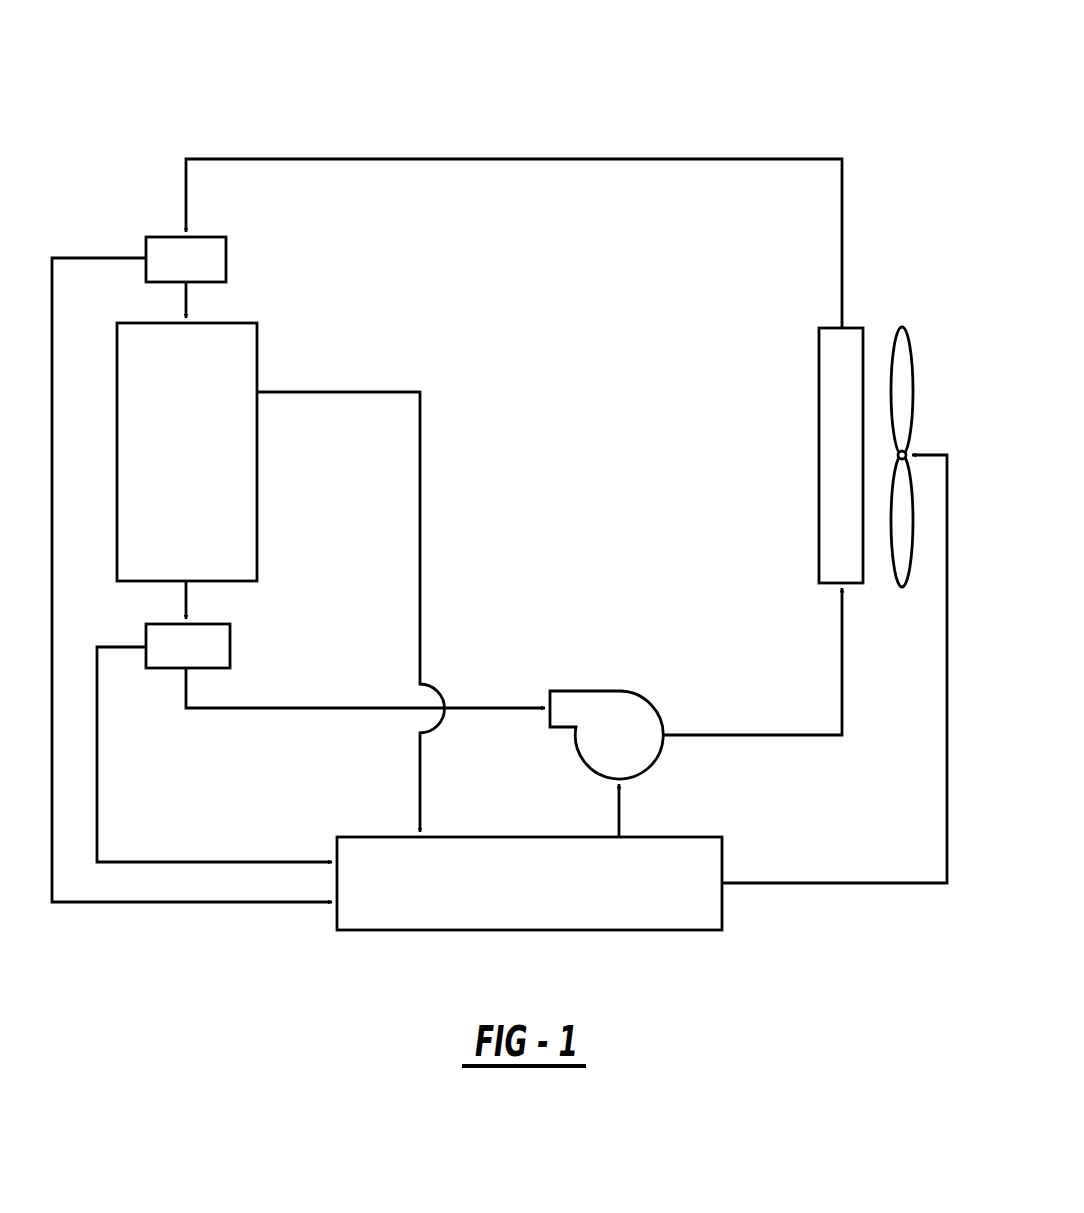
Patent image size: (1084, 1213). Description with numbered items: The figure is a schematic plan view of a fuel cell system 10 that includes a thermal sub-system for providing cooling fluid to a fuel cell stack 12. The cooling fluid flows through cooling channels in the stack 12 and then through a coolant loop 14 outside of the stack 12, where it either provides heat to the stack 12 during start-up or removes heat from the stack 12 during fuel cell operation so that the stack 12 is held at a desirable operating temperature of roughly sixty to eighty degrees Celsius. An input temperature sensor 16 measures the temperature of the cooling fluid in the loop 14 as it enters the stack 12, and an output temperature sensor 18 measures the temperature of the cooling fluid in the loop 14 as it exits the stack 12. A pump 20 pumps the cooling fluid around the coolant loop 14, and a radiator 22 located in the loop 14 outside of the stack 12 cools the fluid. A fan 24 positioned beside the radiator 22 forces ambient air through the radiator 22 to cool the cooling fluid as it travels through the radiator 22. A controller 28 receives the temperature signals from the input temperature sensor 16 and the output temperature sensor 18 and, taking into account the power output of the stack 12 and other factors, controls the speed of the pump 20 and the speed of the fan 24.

The fuel cell system 10 is at (548, 95).
The fuel cell stack 12 is at (257, 477).
The coolant loop 14 is at (642, 159).
The input temperature sensor 16 is at (160, 237).
The output temperature sensor 18 is at (230, 647).
The pump 20 is at (602, 691).
The radiator 22 is at (819, 468).
The fan 24 is at (902, 327).
The controller 28 is at (667, 837).